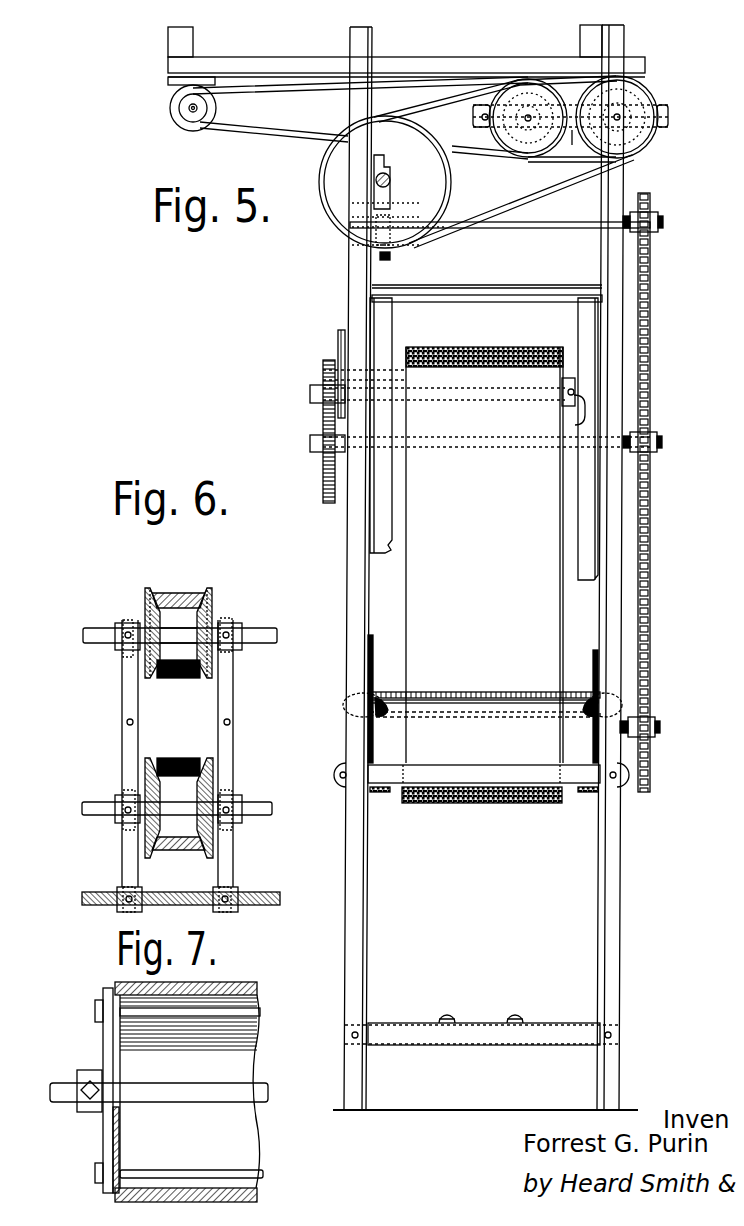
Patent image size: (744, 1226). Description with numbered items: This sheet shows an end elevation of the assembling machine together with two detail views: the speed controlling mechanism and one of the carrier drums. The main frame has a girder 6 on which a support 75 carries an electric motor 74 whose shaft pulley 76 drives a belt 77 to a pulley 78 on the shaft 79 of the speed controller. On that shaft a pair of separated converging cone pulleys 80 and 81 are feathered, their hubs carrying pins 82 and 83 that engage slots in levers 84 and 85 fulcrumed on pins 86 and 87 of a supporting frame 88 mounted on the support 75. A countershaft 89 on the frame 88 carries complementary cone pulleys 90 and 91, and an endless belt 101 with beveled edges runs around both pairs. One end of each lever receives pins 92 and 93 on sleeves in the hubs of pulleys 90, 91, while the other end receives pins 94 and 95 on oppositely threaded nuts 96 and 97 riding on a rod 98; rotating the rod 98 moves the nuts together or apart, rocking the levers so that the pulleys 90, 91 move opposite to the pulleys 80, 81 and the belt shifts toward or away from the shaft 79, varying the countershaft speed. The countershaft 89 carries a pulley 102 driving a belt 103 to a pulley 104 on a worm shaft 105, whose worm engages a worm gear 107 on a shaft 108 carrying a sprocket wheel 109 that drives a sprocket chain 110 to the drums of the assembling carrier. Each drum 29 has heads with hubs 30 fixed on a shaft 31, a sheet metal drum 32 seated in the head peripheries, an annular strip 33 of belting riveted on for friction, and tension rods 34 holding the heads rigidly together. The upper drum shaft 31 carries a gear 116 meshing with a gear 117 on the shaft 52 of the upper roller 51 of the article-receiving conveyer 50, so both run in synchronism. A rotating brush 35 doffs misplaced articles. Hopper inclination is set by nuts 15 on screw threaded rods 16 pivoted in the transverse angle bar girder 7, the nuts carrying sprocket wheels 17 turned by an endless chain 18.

In FIG. 5, the girder 6 is at (393, 30).
In FIG. 5, the transverse angle bar girder 7 is at (572, 777).
In FIG. 5, the nut 15 is at (605, 701).
In FIG. 5, the screw threaded rod 16 is at (368, 742).
In FIG. 5, the sprocket wheel 17 is at (380, 703).
In FIG. 5, the endless chain 18 is at (487, 693).
In FIG. 7, the roller or drum 29 is at (103, 1145).
In FIG. 7, the hub 30 is at (82, 1113).
In FIG. 5, the shaft 31 is at (653, 438).
In FIG. 7, the shaft 31 is at (55, 1100).
In FIG. 7, the sheet metal drum 32 is at (140, 1190).
In FIG. 7, the annular strip of belting 33 is at (242, 985).
In FIG. 7, the tension rod 34 is at (263, 1012).
In FIG. 5, the rotating brush 35 is at (487, 347).
In FIG. 5, the article-receiving conveyer 50 is at (540, 602).
In FIG. 5, the upper roller 51 is at (562, 378).
In FIG. 5, the shaft 52 is at (574, 418).
In FIG. 5, the electric motor 74 is at (172, 115).
In FIG. 5, the support 75 is at (281, 57).
In FIG. 5, the pulley 76 is at (197, 108).
In FIG. 5, the belt 77 is at (297, 94).
In FIG. 5, the pulley 78 is at (543, 155).
In FIG. 5, the shaft 79 is at (526, 120).
In FIG. 6, the shaft 79 is at (88, 802).
In FIG. 6, the cone pulley 80 is at (152, 785).
In FIG. 6, the cone pulley 81 is at (202, 792).
In FIG. 6, the pin 82 is at (124, 816).
In FIG. 6, the pin 83 is at (228, 805).
In FIG. 6, the lever 84 is at (122, 742).
In FIG. 6, the lever 85 is at (233, 742).
In FIG. 6, the fulcrum pin 86 is at (127, 720).
In FIG. 6, the fulcrum pin 87 is at (230, 720).
In FIG. 5, the supporting frame 88 is at (550, 72).
In FIG. 5, the countershaft 89 is at (621, 114).
In FIG. 6, the countershaft 89 is at (267, 635).
In FIG. 6, the cone pulley 90 is at (145, 600).
In FIG. 6, the cone pulley 91 is at (210, 605).
In FIG. 6, the pin 92 is at (122, 638).
In FIG. 6, the pin 93 is at (227, 632).
In FIG. 6, the pin 94 is at (124, 893).
In FIG. 6, the pin 95 is at (230, 890).
In FIG. 6, the threaded nut 96 is at (133, 896).
In FIG. 6, the threaded nut 97 is at (230, 903).
In FIG. 5, the rod 98 is at (482, 119).
In FIG. 6, the rod 98 is at (265, 897).
In FIG. 5, the endless belt 101 is at (577, 149).
In FIG. 6, the endless belt 101 is at (187, 593).
In FIG. 5, the pulley 102 is at (640, 140).
In FIG. 5, the belt 103 is at (548, 185).
In FIG. 5, the pulley 104 is at (451, 180).
In FIG. 5, the worm shaft 105 is at (389, 175).
In FIG. 5, the worm gear 107 is at (390, 256).
In FIG. 5, the shaft 108 is at (492, 229).
In FIG. 5, the sprocket wheel 109 is at (650, 197).
In FIG. 5, the sprocket chain 110 is at (650, 358).
In FIG. 5, the gear 116 is at (323, 488).
In FIG. 5, the gear 117 is at (323, 370).